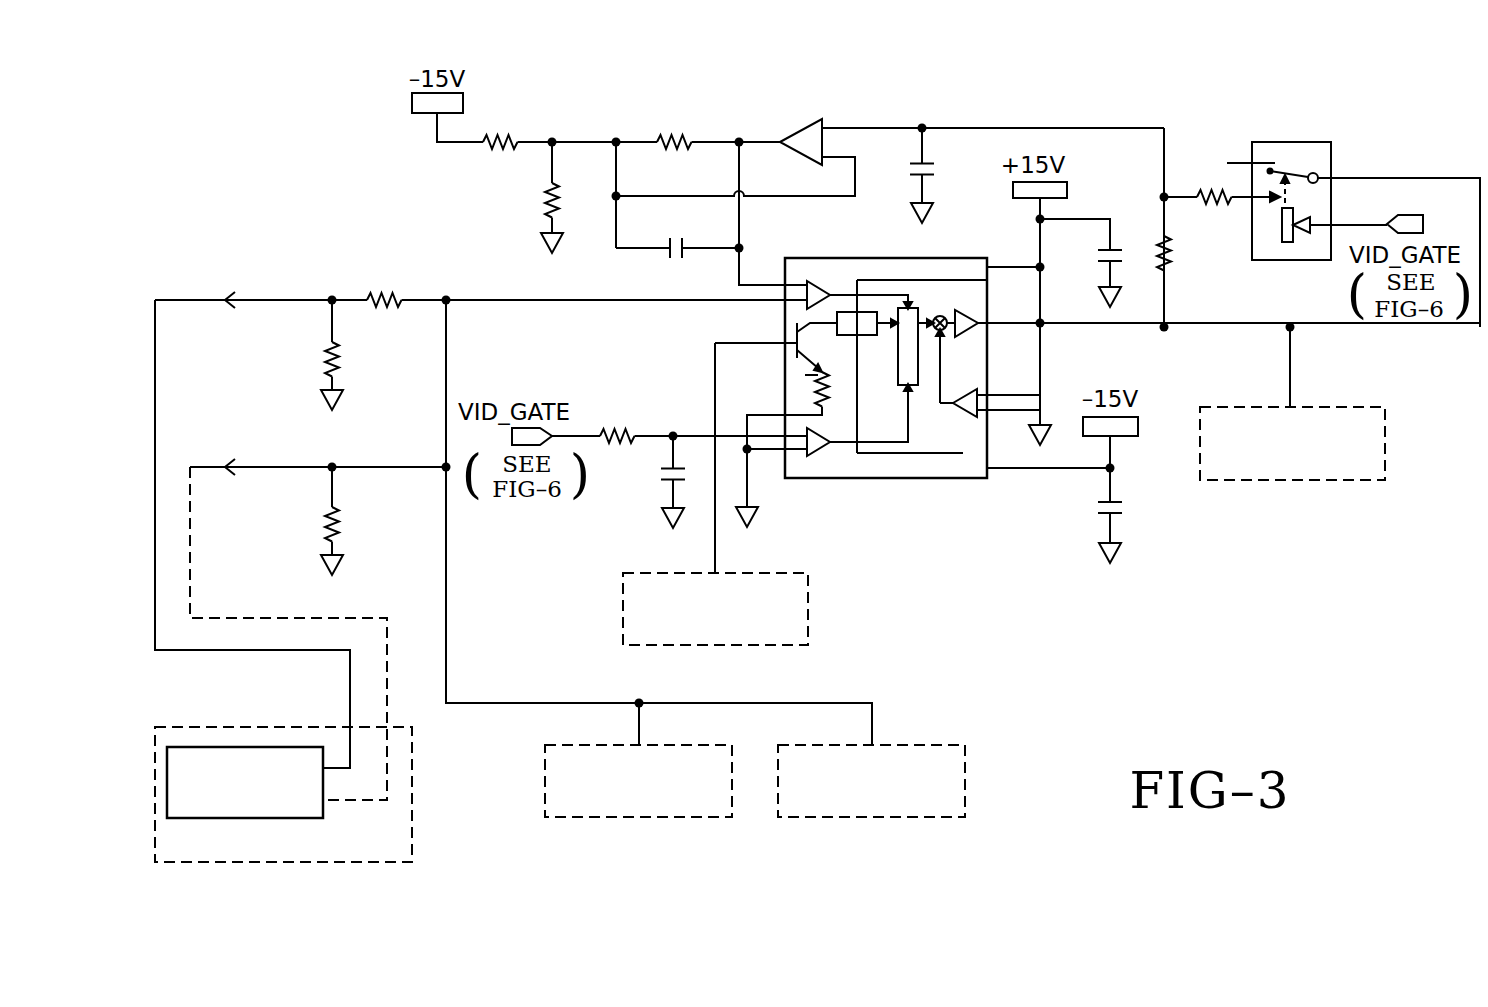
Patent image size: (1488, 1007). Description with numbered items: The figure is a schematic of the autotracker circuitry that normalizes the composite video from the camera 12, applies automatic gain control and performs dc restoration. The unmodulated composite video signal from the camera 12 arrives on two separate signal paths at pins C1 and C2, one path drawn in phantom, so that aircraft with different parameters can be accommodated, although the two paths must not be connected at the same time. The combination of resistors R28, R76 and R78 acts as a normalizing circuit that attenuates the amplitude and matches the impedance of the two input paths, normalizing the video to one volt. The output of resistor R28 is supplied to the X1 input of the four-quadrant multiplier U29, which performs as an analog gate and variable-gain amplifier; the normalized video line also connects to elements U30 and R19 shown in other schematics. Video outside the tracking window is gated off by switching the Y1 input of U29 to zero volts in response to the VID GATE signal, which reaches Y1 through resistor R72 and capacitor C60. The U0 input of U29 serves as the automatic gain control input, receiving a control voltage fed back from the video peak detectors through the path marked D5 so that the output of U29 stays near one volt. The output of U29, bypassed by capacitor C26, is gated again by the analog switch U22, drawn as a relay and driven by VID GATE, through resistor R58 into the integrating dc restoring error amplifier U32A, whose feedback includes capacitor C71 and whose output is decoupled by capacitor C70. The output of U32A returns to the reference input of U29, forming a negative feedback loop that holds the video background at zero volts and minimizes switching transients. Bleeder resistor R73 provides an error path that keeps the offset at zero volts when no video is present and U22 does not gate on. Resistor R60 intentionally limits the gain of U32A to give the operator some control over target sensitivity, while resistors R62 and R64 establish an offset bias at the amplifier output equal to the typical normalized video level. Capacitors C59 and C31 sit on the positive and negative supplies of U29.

The camera 12 is at (218, 747).
The pin C1 is at (273, 300).
The pin C2 is at (273, 467).
The X1 input X1 is at (700, 300).
The U0 input U0 is at (732, 343).
The Y1 input Y1 is at (695, 434).
The resistor R64 is at (510, 144).
The resistor R62 is at (526, 197).
The resistor R60 is at (715, 144).
The capacitor C71 is at (677, 250).
The error amplifier U32A is at (972, 126).
The capacitor C70 is at (943, 175).
The capacitor C59 is at (1078, 265).
The bleeder resistor R73 is at (1194, 274).
The resistor R58 is at (1222, 199).
The analog switch U22 is at (1353, 221).
The four-quadrant multiplier U29 is at (1097, 379).
The resistor R28 is at (381, 275).
The resistor R78 is at (357, 355).
The resistor R76 is at (357, 521).
The resistor R72 is at (631, 436).
The capacitor C60 is at (639, 482).
The diode D5 is at (715, 494).
The element U30 is at (638, 760).
The resistor R19 is at (871, 781).
The capacitor C31 is at (1079, 528).
The capacitor C26 is at (1292, 403).